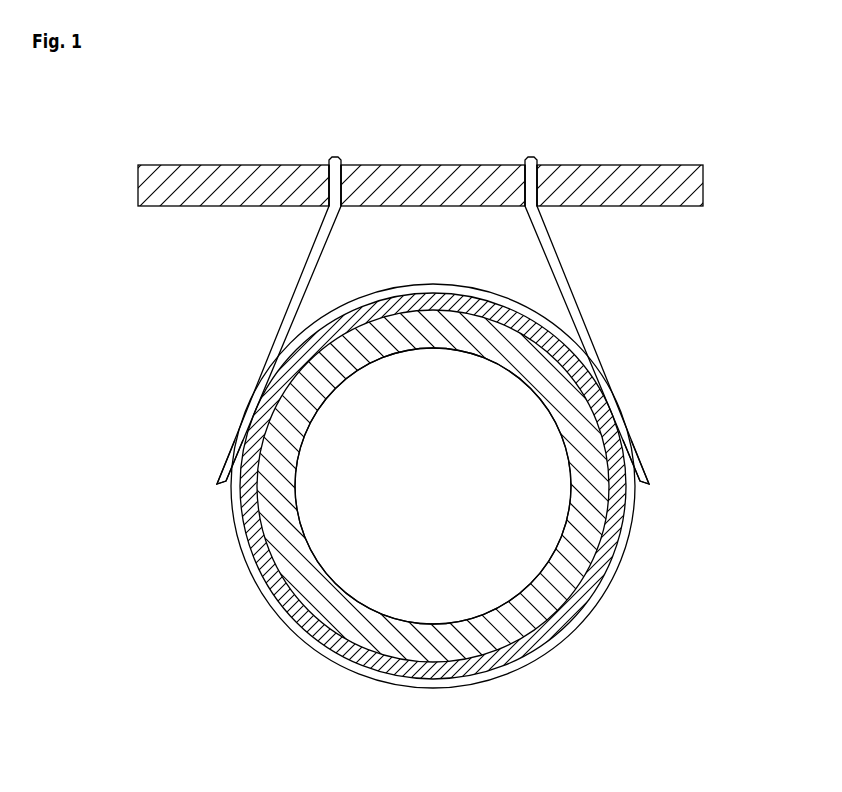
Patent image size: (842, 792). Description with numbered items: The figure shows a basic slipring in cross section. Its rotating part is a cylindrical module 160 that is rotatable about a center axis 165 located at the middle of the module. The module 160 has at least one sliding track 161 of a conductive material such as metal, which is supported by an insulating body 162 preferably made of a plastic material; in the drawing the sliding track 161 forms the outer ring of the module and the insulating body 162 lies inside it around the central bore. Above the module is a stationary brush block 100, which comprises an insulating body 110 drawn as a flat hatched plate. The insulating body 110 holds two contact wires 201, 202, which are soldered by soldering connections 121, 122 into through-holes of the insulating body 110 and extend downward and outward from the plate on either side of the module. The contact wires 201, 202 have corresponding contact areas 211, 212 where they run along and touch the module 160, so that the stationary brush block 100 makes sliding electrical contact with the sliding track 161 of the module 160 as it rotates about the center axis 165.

The stationary brush block 100 is at (648, 153).
The insulating body 110 is at (633, 197).
The soldering connection 121 is at (334, 158).
The soldering connection 122 is at (530, 158).
The contact wire 201 is at (288, 284).
The contact wire 202 is at (578, 284).
The contact area 211 is at (246, 402).
The contact area 212 is at (622, 403).
The cylindrical module 160 is at (244, 565).
The sliding track 161 is at (612, 541).
The insulating body 162 is at (282, 485).
The center axis 165 is at (431, 485).